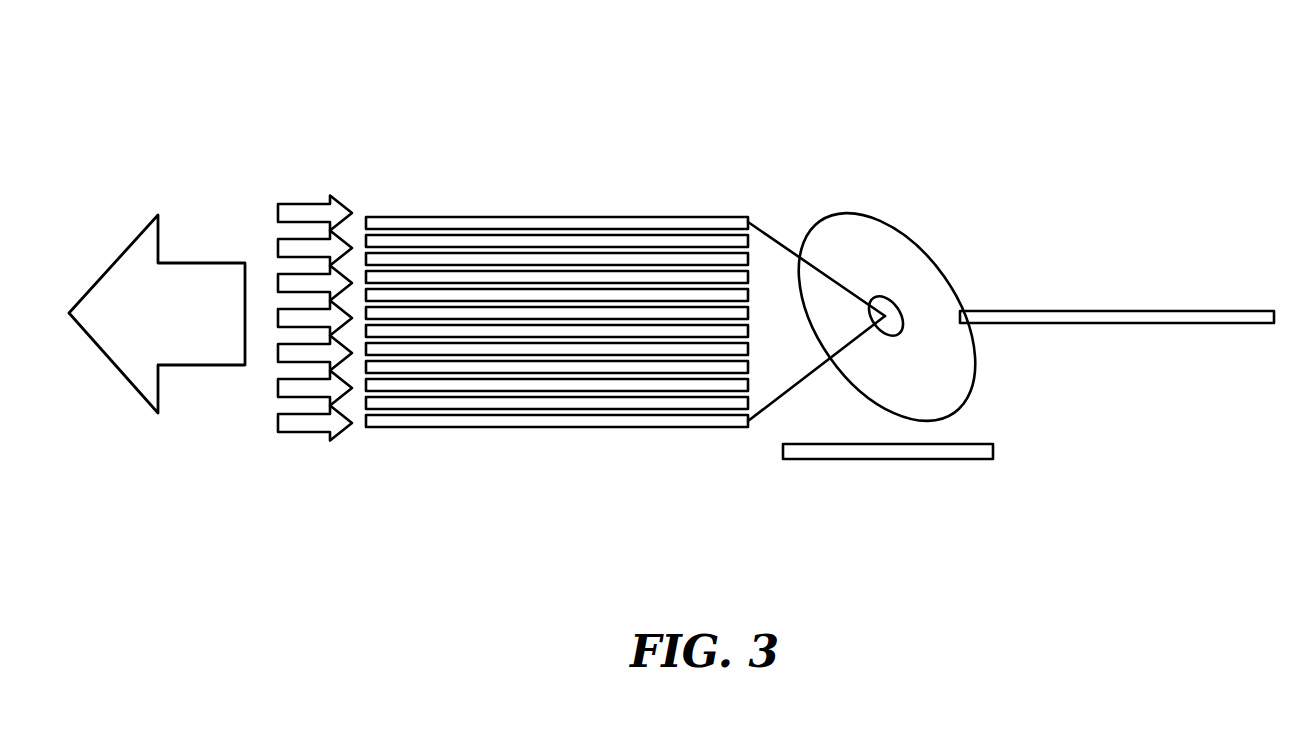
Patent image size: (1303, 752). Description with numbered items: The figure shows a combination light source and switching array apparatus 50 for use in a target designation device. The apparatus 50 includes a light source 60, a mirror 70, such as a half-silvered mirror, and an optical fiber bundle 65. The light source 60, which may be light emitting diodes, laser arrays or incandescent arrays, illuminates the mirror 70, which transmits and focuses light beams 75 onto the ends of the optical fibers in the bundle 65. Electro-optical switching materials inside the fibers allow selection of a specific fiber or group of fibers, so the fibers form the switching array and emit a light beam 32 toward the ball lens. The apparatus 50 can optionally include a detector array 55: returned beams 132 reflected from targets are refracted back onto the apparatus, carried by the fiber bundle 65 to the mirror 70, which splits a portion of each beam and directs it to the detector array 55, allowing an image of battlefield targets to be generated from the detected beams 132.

The combination light source and switching array apparatus 50 is at (303, 96).
The light beam 32 is at (157, 314).
The returned beams 132 is at (295, 432).
The optical fiber bundle 65 is at (643, 216).
The light beams 75 is at (770, 233).
The mirror 70 is at (887, 313).
The light source 60 is at (1085, 273).
The detector array 55 is at (993, 451).